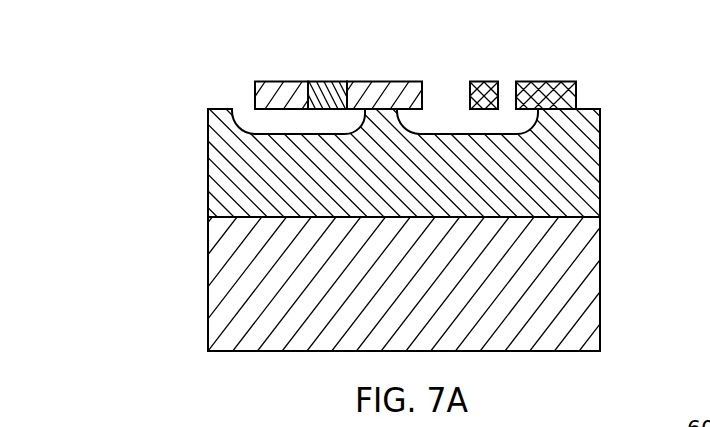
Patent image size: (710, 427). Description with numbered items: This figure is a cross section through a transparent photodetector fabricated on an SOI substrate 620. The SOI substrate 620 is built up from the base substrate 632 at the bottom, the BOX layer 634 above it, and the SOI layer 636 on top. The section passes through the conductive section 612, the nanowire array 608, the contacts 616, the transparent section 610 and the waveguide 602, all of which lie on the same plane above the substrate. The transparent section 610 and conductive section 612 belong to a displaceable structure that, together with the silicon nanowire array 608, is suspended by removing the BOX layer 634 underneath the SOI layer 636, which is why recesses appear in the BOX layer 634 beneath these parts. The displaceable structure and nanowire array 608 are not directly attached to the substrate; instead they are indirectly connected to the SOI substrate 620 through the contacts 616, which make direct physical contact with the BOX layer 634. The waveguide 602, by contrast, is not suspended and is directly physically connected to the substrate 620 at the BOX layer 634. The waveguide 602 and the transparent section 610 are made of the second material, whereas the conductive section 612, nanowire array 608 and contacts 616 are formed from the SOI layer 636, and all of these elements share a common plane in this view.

The waveguide 602 is at (546, 92).
The nanowire array 608 is at (329, 92).
The transparent section 610 is at (481, 90).
The conductive section 612 is at (282, 90).
The contacts 616 is at (388, 90).
The SOI substrate 620 is at (391, 230).
The base substrate 632 is at (585, 285).
The BOX layer 634 is at (590, 169).
The SOI layer 636 is at (602, 96).